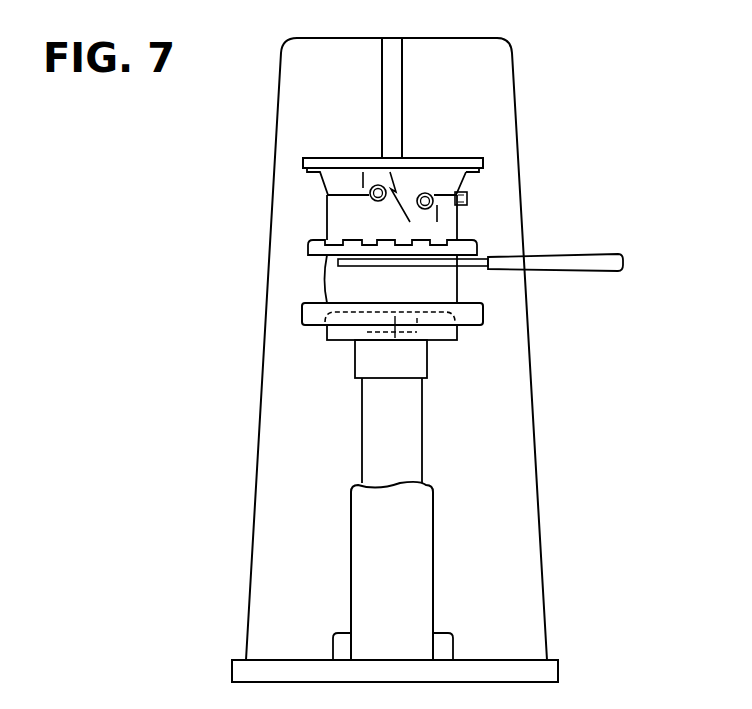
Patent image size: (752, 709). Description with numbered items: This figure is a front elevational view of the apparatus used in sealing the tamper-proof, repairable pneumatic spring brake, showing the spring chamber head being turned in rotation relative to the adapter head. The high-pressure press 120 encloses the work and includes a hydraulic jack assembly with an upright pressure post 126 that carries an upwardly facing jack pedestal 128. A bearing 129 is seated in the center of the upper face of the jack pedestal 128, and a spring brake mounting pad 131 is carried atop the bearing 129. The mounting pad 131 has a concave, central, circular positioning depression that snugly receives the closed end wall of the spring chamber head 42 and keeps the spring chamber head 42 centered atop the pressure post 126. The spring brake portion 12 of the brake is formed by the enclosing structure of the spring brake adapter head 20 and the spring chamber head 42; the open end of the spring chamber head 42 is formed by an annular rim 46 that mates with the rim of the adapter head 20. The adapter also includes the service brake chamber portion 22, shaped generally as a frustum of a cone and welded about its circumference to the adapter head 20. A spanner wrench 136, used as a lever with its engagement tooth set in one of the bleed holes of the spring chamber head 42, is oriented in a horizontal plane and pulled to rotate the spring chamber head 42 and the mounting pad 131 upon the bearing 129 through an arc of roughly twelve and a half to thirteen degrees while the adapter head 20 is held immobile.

The high-pressure press 120 is at (524, 126).
The spring brake portion 12 is at (383, 231).
The spring brake adapter head portion 20 is at (326, 217).
The service brake chamber portion 22 is at (447, 178).
The annular rim 46 is at (313, 250).
The spring chamber head 42 is at (333, 283).
The spanner wrench 136 is at (573, 255).
The spring brake mounting pad 131 is at (472, 311).
The bearing 129 is at (390, 342).
The jack pedestal 128 is at (457, 333).
The pressure post 126 is at (408, 430).